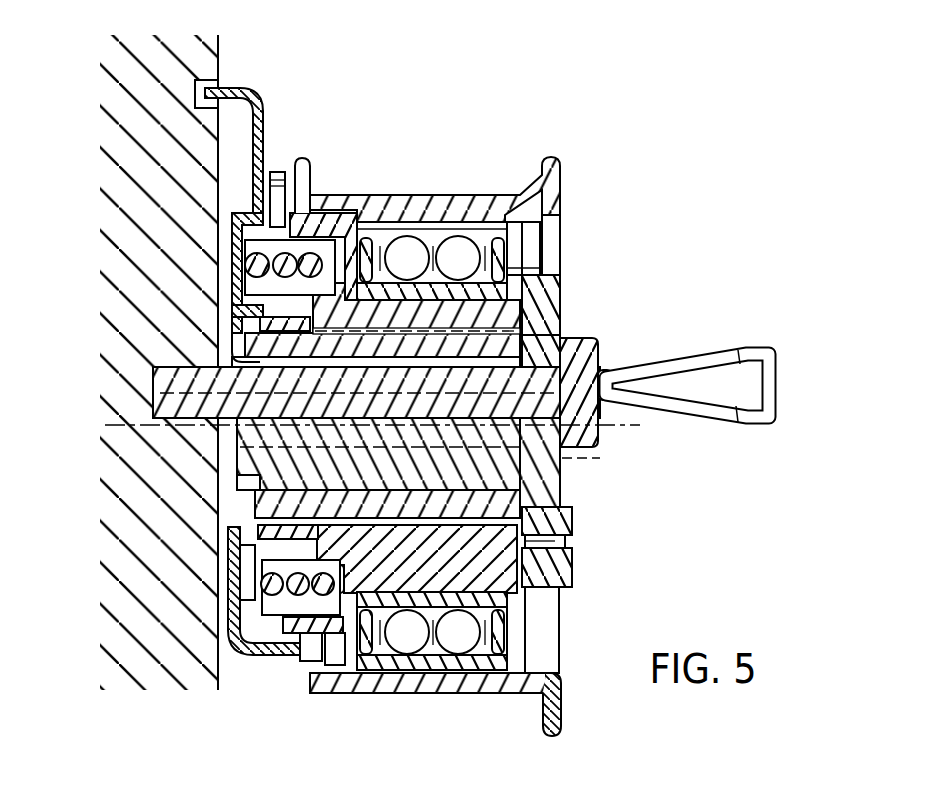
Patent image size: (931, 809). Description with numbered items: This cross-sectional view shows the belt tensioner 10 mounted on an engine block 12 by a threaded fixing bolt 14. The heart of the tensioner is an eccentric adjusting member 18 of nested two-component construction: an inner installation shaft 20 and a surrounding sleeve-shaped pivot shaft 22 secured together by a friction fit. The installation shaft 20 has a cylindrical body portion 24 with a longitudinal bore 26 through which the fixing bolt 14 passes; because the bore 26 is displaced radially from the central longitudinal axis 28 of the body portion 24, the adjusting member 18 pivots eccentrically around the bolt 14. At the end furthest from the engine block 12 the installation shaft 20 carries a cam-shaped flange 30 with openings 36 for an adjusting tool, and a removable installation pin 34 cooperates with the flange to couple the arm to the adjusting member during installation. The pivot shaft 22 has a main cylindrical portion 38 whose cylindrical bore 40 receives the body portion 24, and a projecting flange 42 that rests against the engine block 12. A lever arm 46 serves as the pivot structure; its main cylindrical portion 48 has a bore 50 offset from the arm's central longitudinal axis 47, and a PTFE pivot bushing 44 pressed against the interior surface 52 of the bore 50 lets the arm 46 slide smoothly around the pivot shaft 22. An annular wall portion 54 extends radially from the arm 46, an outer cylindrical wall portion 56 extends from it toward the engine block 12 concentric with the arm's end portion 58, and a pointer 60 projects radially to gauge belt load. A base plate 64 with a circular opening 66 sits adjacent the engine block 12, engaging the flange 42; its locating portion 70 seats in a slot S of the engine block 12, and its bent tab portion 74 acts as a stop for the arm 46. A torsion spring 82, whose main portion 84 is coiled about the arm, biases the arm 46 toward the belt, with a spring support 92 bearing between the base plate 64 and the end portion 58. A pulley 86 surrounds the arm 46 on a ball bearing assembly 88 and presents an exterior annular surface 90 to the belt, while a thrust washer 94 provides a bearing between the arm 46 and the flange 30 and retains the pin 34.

The belt tensioner 10 is at (678, 533).
The engine block 12 is at (220, 47).
The slot S is at (218, 84).
The fixing bolt 14 is at (583, 363).
The eccentric adjusting member 18 is at (580, 578).
The installation shaft 20 is at (556, 485).
The pivot shaft 22 is at (566, 512).
The body portion 24 is at (238, 455).
The longitudinal bore 26 is at (152, 402).
The central longitudinal axis 28 is at (640, 428).
The flange 30 is at (550, 578).
The installation pin 34 is at (746, 350).
The openings 36 is at (566, 541).
The main cylindrical portion 38 is at (560, 338).
The cylindrical bore 40 is at (250, 478).
The projecting flange 42 is at (225, 312).
The pivot bushing 44 is at (252, 560).
The lever arm 46 is at (334, 647).
The central longitudinal axis 47 is at (600, 458).
The main cylindrical portion 48 is at (432, 300).
The bore 50 is at (250, 357).
The interior surface 52 is at (262, 505).
The annular wall portion 54 is at (350, 208).
The outer cylindrical wall portion 56 is at (322, 205).
The end portion 58 is at (232, 300).
The pointer 60 is at (283, 178).
The base plate 64 is at (232, 628).
The circular opening 66 is at (228, 333).
The locating portion 70 is at (252, 150).
The bent tab portion 74 is at (280, 658).
The torsion spring 82 is at (240, 255).
The main portion 84 is at (270, 597).
The pulley 86 is at (561, 170).
The ball bearing assembly 88 is at (508, 247).
The exterior annular surface 90 is at (480, 695).
The spring support 92 is at (238, 585).
The thrust washer 94 is at (522, 300).